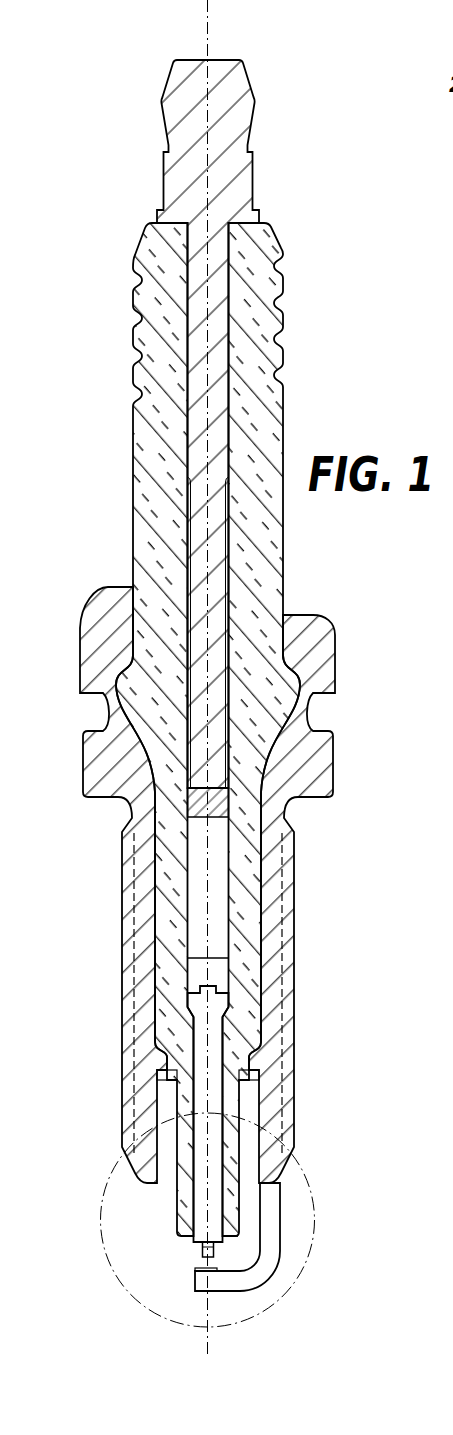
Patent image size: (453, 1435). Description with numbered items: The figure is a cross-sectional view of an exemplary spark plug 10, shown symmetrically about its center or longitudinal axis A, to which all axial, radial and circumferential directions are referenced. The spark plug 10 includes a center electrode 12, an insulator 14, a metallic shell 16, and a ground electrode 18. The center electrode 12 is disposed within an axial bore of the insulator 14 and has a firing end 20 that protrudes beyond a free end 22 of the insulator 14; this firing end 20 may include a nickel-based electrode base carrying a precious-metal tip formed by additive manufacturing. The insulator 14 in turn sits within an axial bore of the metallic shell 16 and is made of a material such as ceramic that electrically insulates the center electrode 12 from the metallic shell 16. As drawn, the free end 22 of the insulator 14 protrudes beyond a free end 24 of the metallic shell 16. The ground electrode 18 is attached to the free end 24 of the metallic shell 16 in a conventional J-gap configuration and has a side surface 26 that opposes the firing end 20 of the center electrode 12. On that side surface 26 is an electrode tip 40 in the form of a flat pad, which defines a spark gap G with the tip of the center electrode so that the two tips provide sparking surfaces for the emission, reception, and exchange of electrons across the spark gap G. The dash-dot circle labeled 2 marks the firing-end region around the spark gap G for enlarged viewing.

The spark plug 10 is at (217, 698).
The center electrode 12 is at (210, 1162).
The insulator 14 is at (235, 1112).
The metallic shell 16 is at (293, 1073).
The ground electrode 18 is at (268, 1258).
The firing end 20 is at (186, 1248).
The free end of the insulator 22 is at (235, 1247).
The free end of the metallic shell 24 is at (143, 1185).
The side surface 26 is at (229, 1270).
The electrode tip 40 is at (196, 1267).
The spark gap G is at (192, 1259).
The longitudinal axis A is at (206, 25).
The detail region of FIG. 2 is at (112, 1180).